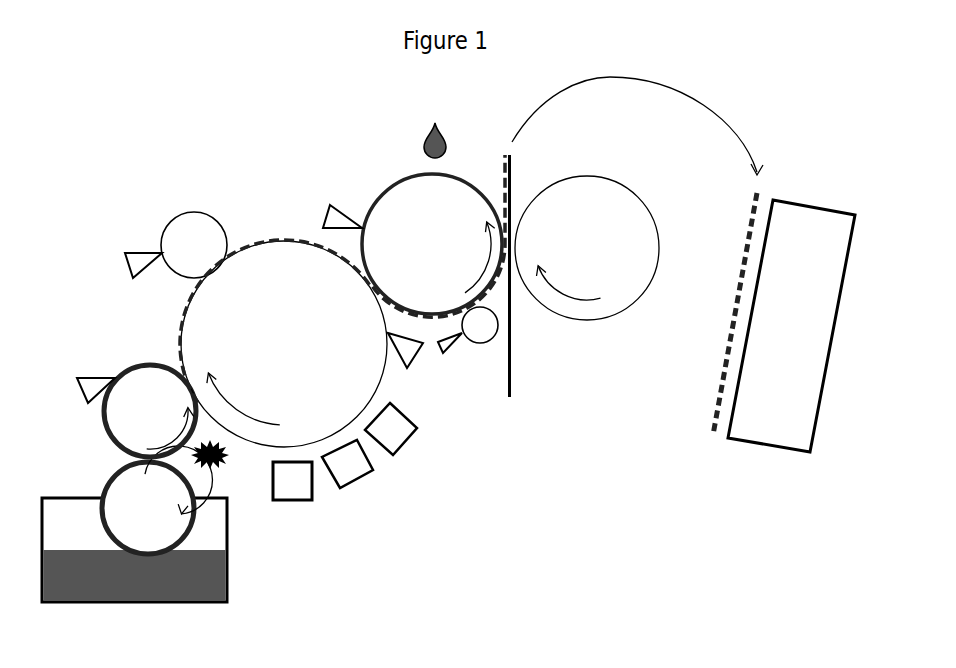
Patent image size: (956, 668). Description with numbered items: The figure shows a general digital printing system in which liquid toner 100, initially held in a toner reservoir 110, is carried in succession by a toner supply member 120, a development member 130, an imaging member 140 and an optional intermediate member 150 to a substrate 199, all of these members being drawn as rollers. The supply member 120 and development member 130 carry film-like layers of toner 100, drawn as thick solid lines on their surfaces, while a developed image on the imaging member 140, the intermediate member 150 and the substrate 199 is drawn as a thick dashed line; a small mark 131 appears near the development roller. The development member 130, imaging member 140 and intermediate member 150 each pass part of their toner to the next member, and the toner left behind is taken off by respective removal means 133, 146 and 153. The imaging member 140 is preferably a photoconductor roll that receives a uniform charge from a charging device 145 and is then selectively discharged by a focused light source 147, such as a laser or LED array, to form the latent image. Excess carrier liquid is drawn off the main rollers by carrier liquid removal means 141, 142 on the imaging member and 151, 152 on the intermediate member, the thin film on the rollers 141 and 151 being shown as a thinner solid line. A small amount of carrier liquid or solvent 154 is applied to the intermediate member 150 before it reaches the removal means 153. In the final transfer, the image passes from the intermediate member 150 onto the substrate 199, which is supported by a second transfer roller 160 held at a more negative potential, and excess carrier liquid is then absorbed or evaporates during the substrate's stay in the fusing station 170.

The toner 100 is at (227, 582).
The toner reservoir 110 is at (158, 602).
The toner supply member 120 is at (127, 492).
The development member 130 is at (127, 447).
The ink particles 131 is at (217, 467).
The removal means 133 is at (95, 381).
The imaging member 140 is at (373, 370).
The carrier liquid removal means 141 is at (193, 227).
The carrier liquid removal means 142 is at (138, 253).
The charging device 145 is at (365, 485).
The removal means 146 is at (415, 355).
The light source 147 is at (295, 492).
The intermediate member 150 is at (410, 190).
The carrier liquid removal means 151 is at (480, 325).
The carrier liquid removal means 152 is at (445, 350).
The removal means 153 is at (327, 210).
The carrier liquid or solvent 154 is at (438, 127).
The second transfer roller 160 is at (630, 292).
The fusing station 170 is at (768, 430).
The substrate 199 is at (725, 358).